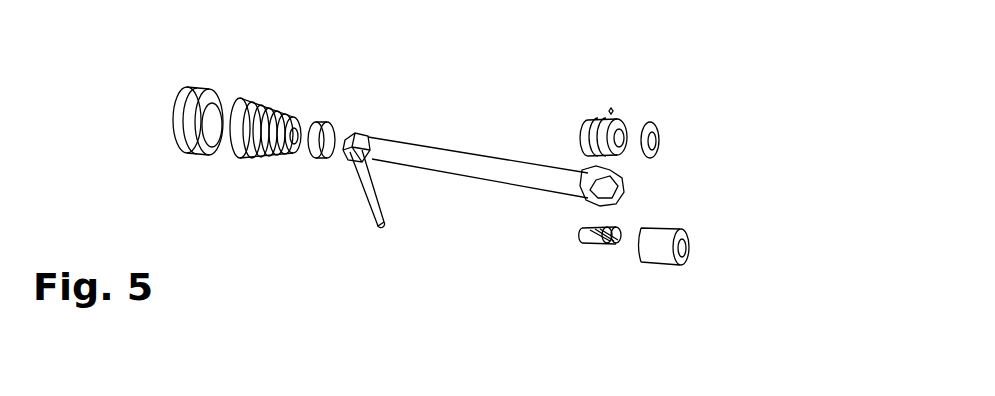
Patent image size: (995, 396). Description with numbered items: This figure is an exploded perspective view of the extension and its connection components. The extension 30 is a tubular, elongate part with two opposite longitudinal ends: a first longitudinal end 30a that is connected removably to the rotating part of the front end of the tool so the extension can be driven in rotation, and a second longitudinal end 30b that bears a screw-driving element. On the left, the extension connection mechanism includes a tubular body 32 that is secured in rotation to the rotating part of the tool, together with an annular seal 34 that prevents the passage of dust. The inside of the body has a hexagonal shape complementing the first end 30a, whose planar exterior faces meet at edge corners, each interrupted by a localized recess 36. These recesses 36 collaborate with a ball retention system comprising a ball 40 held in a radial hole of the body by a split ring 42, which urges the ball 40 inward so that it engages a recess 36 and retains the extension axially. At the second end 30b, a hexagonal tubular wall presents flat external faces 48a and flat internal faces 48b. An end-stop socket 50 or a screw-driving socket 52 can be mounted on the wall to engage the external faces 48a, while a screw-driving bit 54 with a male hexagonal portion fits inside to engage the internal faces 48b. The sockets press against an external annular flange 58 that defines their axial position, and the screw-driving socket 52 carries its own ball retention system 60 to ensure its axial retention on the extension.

The extension 30 is at (536, 165).
The first longitudinal end 30a is at (366, 138).
The second longitudinal end 30b is at (622, 190).
The tubular body 32 is at (277, 152).
The annular seal 34 is at (200, 152).
The localized recess 36 is at (375, 205).
The ball 40 is at (286, 103).
The split ring 42 is at (313, 160).
The flat external faces 48a is at (620, 187).
The flat internal faces 48b is at (606, 199).
The end-stop socket 50 is at (660, 262).
The screw-driving socket 52 is at (577, 132).
The screw-driving bit 54 is at (593, 245).
The external annular flange 58 is at (622, 200).
The ball retention system 60 is at (625, 107).